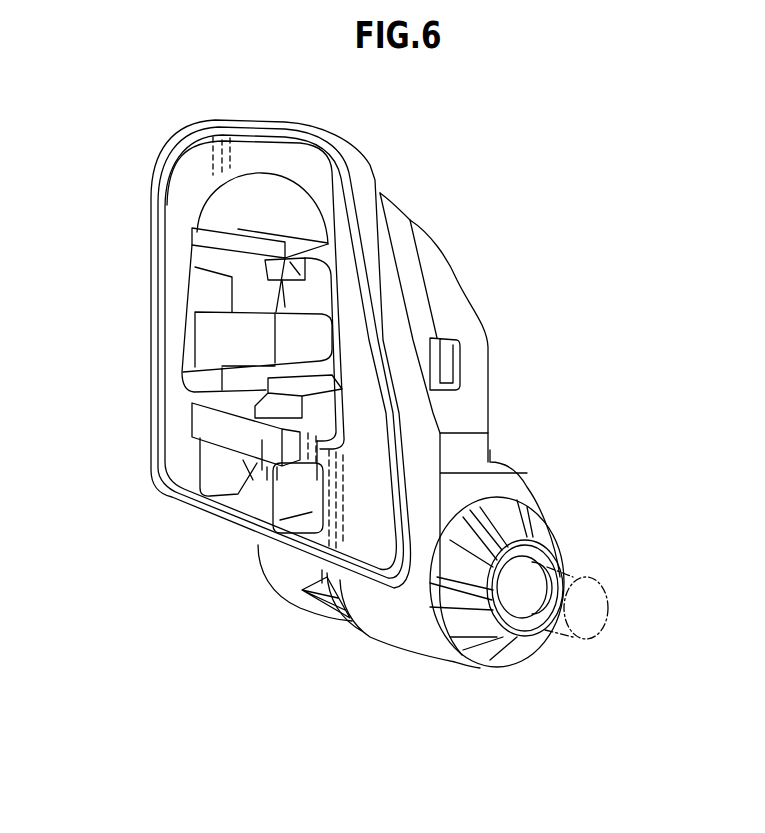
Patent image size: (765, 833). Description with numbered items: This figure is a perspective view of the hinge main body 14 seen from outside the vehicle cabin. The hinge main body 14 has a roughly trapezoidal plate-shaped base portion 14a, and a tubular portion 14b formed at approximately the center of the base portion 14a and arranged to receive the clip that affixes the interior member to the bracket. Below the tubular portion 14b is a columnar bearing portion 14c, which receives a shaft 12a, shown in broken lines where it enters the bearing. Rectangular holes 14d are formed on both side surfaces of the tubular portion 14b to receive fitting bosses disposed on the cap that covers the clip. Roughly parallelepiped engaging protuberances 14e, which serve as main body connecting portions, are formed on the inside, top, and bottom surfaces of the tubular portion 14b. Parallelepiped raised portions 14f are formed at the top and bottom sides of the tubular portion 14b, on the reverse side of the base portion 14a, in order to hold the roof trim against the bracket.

The hinge main body 14 is at (384, 163).
The base portion 14a is at (200, 180).
The tubular portion 14b is at (489, 401).
The columnar bearing portion 14c is at (547, 507).
The rectangular holes 14d is at (318, 333).
The engaging protuberances 14e is at (268, 271).
The raised portions 14f is at (240, 229).
The shaft 12a is at (575, 578).